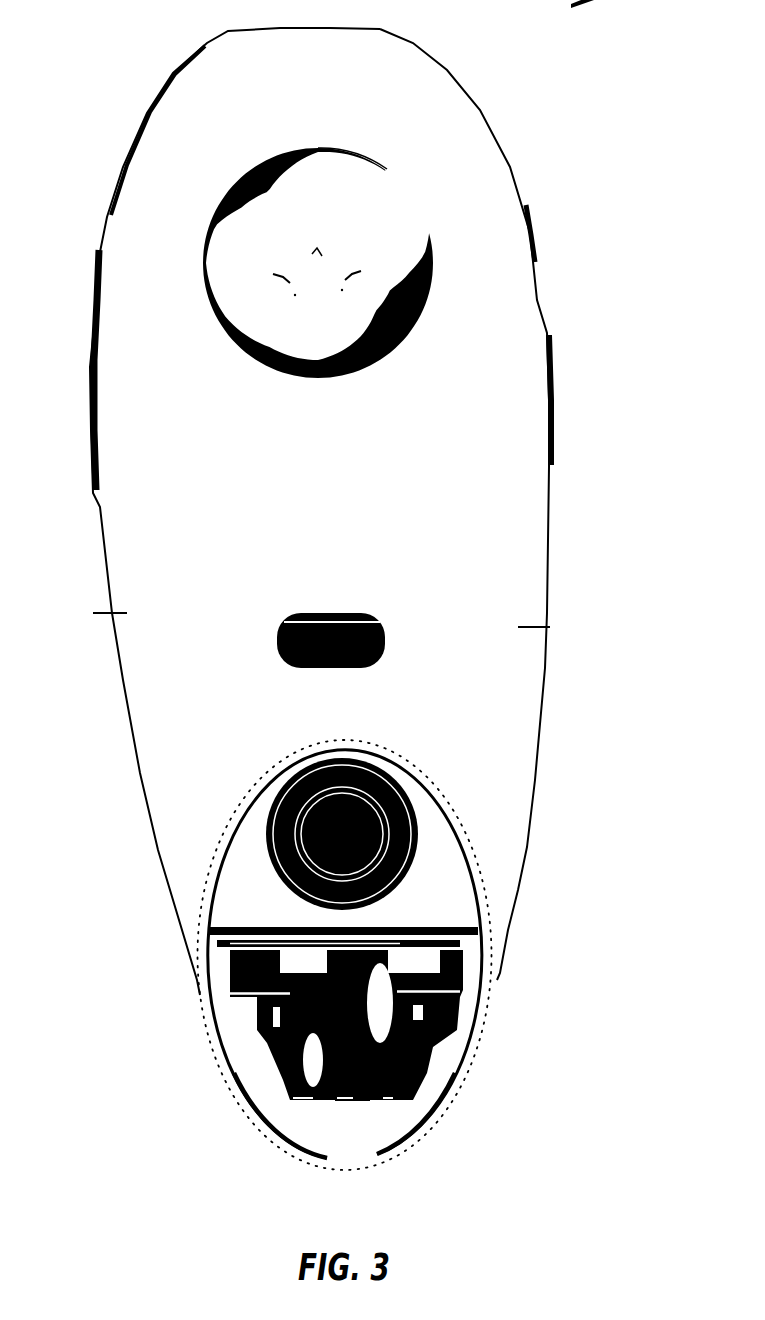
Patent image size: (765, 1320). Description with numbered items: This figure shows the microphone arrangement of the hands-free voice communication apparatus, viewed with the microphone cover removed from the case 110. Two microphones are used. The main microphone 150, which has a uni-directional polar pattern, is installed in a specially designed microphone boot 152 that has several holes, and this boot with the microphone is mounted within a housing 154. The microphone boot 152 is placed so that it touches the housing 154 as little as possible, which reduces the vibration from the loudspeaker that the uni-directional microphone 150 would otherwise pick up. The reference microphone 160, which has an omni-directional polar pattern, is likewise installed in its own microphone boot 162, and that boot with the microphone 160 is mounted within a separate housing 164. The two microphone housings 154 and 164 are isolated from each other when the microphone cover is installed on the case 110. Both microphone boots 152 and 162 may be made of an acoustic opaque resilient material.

The case 110 is at (545, 668).
The main microphone 150 is at (352, 1120).
The microphone boot 152 is at (383, 1052).
The housing 154 is at (238, 1073).
The reference microphone 160 is at (385, 829).
The microphone boot 162 is at (417, 848).
The housing 164 is at (226, 853).